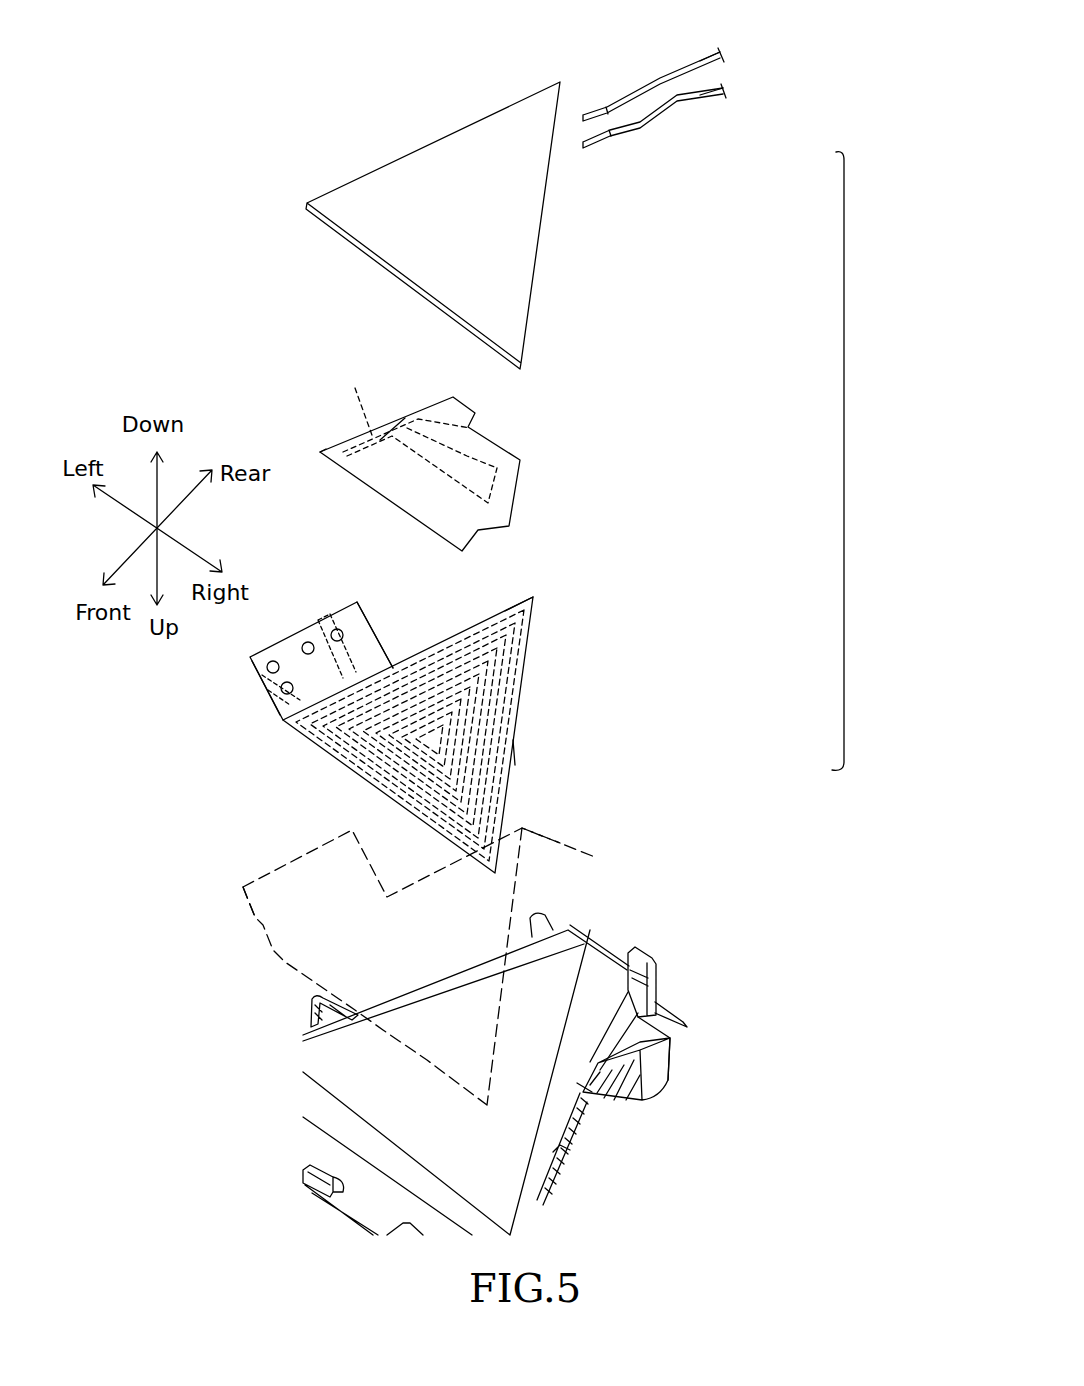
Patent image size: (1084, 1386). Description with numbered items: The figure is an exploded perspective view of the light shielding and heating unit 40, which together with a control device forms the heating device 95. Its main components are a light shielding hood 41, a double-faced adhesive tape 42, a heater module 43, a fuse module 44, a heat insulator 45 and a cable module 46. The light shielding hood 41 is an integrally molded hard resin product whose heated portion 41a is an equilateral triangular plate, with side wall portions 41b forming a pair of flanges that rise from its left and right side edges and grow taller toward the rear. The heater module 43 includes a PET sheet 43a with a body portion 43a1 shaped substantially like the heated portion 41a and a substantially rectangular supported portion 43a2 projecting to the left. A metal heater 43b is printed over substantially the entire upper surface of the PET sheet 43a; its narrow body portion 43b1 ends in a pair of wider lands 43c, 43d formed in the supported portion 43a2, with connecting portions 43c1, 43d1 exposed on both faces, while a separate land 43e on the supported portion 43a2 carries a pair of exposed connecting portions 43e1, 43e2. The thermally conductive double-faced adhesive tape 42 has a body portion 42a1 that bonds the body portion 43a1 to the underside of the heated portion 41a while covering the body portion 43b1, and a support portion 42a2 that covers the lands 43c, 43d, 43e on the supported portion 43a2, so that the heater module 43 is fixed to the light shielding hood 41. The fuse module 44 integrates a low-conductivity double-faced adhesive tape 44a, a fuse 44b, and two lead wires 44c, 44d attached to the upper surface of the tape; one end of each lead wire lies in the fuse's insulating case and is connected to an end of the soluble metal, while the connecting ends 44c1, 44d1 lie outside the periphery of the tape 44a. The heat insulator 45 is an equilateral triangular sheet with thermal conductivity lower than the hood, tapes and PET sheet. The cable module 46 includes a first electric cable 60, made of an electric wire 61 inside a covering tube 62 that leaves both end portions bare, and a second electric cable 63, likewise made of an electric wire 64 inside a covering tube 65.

The light shielding and heating unit 40 is at (885, 461).
The heating device 95 is at (856, 458).
The light shielding hood 41 is at (563, 987).
The heated portion 41a is at (397, 1022).
The side wall portions 41b is at (587, 1133).
The double-faced adhesive tape 42 is at (489, 887).
The body portion 42a1 is at (548, 886).
The support portion 42a2 is at (265, 921).
The heater module 43 is at (494, 709).
The PET sheet 43a is at (454, 727).
The body portion 43a1 is at (525, 622).
The supported portion 43a2 is at (372, 617).
The heater 43b is at (522, 692).
The body portion 43b1 is at (514, 752).
The land 43c is at (386, 636).
The connecting portion 43c1 is at (336, 628).
The land 43d is at (283, 714).
The connecting portion 43d1 is at (281, 690).
The land 43e is at (301, 643).
The connecting portion 43e1 is at (307, 642).
The connecting portion 43e2 is at (253, 661).
The fuse module 44 is at (492, 438).
The double-faced adhesive tape 44a is at (347, 452).
The fuse 44b is at (500, 466).
The lead wire 44c is at (470, 428).
The connecting end 44c1 is at (403, 417).
The lead wire 44d is at (360, 401).
The connecting end 44d1 is at (260, 391).
The heat insulator 45 is at (560, 306).
The cable module 46 is at (706, 107).
The first electric cable 60 is at (651, 68).
The electric wire 61 is at (605, 108).
The covering tube 62 is at (703, 55).
The second electric cable 63 is at (652, 142).
The electric wire 64 is at (597, 152).
The covering tube 65 is at (688, 108).